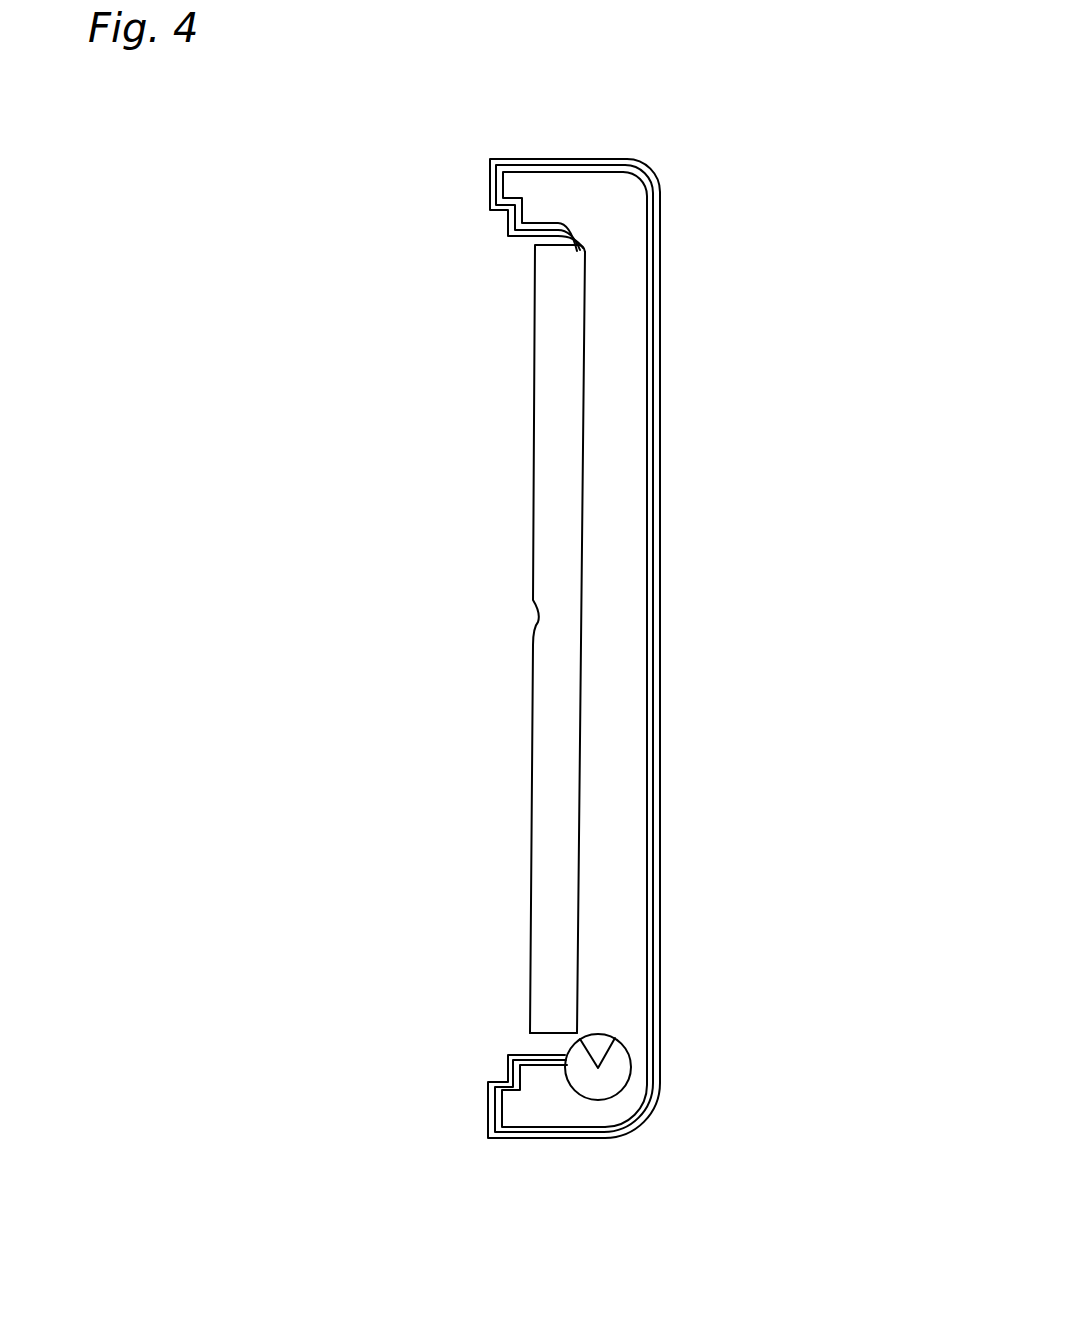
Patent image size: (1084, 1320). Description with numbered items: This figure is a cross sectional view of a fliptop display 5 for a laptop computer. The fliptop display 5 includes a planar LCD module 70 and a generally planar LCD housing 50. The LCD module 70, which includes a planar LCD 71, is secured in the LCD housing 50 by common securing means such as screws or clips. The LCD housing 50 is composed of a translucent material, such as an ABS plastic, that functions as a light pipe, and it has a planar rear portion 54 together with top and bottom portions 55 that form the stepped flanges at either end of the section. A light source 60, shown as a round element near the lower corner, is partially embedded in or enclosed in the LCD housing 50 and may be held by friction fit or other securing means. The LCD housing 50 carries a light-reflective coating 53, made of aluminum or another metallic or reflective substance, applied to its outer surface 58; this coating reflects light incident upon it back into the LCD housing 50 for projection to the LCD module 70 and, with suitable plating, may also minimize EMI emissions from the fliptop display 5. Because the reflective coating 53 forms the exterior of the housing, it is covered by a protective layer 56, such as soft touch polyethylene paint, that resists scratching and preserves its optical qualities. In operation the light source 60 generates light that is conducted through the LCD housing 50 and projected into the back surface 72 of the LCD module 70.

The fliptop display 5 is at (778, 157).
The LCD housing 50 is at (703, 262).
The light-reflective coating 53 is at (655, 707).
The planar rear portion 54 is at (667, 380).
The top and bottom portions 55 is at (558, 147).
The protective layer 56 is at (662, 753).
The outer surface 58 is at (647, 513).
The light source 60 is at (597, 1028).
The LCD module 70 is at (473, 277).
The planar LCD 71 is at (528, 345).
The back surface 72 is at (582, 380).